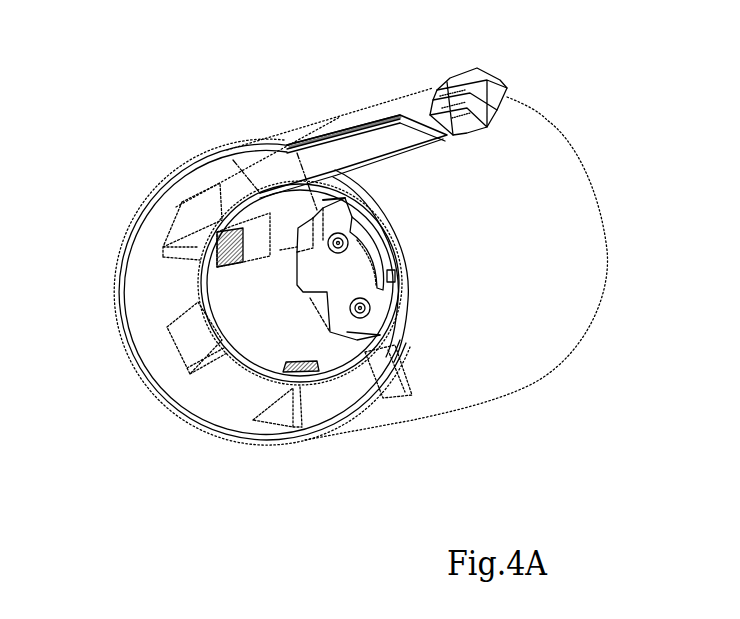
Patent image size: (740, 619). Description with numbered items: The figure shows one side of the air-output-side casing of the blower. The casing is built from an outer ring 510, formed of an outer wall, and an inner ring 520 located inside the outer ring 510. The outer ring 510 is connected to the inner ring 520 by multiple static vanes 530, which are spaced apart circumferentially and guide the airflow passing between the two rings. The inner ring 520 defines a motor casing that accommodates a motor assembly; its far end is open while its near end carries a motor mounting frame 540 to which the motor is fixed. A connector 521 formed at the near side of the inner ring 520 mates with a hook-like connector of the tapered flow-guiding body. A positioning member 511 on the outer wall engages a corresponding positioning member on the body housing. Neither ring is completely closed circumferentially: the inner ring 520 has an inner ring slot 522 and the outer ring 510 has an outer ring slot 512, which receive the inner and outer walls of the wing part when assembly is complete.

The outer ring 510 is at (543, 203).
The positioning member 511 is at (447, 82).
The outer ring slot 512 is at (385, 132).
The inner ring 520 is at (270, 352).
The connector 521 is at (323, 375).
The inner ring slot 522 is at (235, 218).
The static vanes 530 is at (263, 167).
The motor mounting frame 540 is at (352, 330).